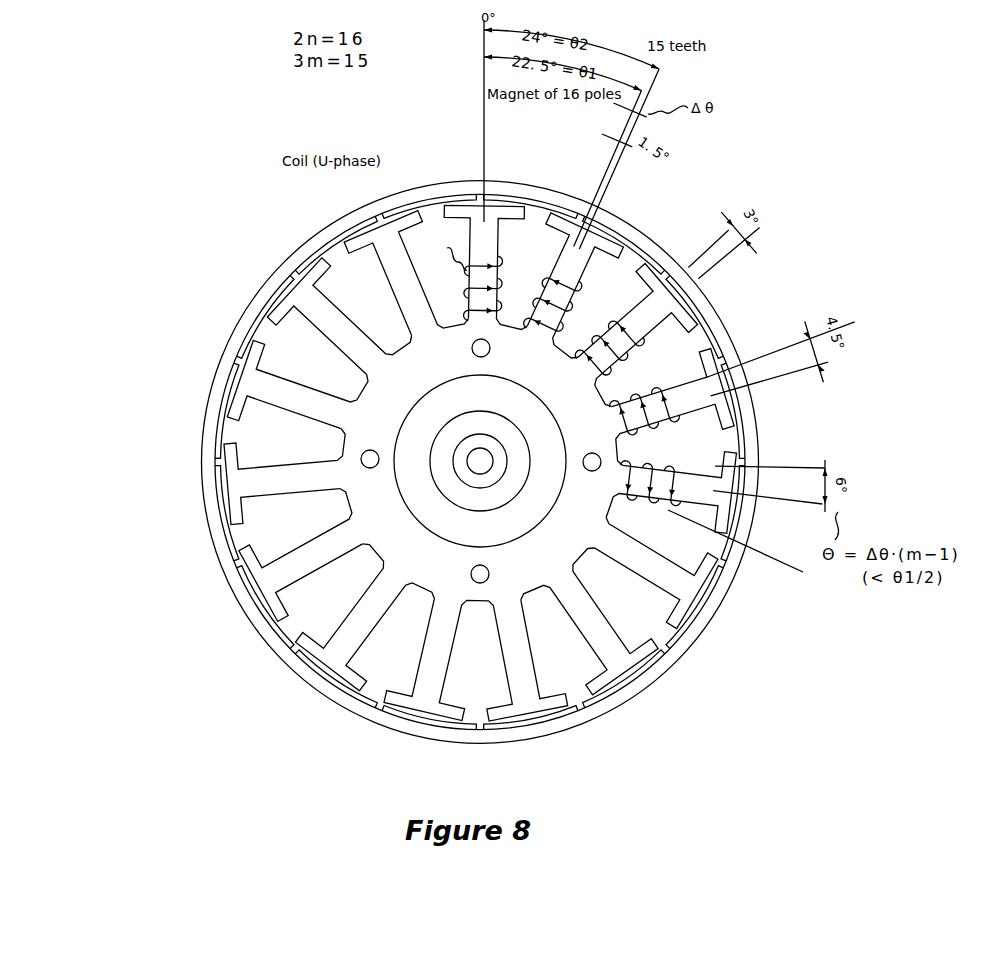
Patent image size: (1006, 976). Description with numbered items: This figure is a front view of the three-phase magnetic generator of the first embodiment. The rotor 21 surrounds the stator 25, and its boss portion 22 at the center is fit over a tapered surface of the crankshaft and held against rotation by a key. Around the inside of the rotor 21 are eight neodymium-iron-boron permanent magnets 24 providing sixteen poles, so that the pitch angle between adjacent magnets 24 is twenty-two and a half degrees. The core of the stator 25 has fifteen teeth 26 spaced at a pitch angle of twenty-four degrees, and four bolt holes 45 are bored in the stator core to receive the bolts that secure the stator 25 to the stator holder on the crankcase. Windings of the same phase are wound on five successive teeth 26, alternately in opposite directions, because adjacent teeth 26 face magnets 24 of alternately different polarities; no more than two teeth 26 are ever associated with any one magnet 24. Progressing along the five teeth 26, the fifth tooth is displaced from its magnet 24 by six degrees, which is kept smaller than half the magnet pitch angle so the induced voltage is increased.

The rotor 21 is at (257, 293).
The boss portion 22 is at (478, 410).
The permanent magnets 24 is at (456, 199).
The stator 25 is at (535, 396).
The teeth 26 is at (651, 584).
The bolt holes 45 is at (362, 466).